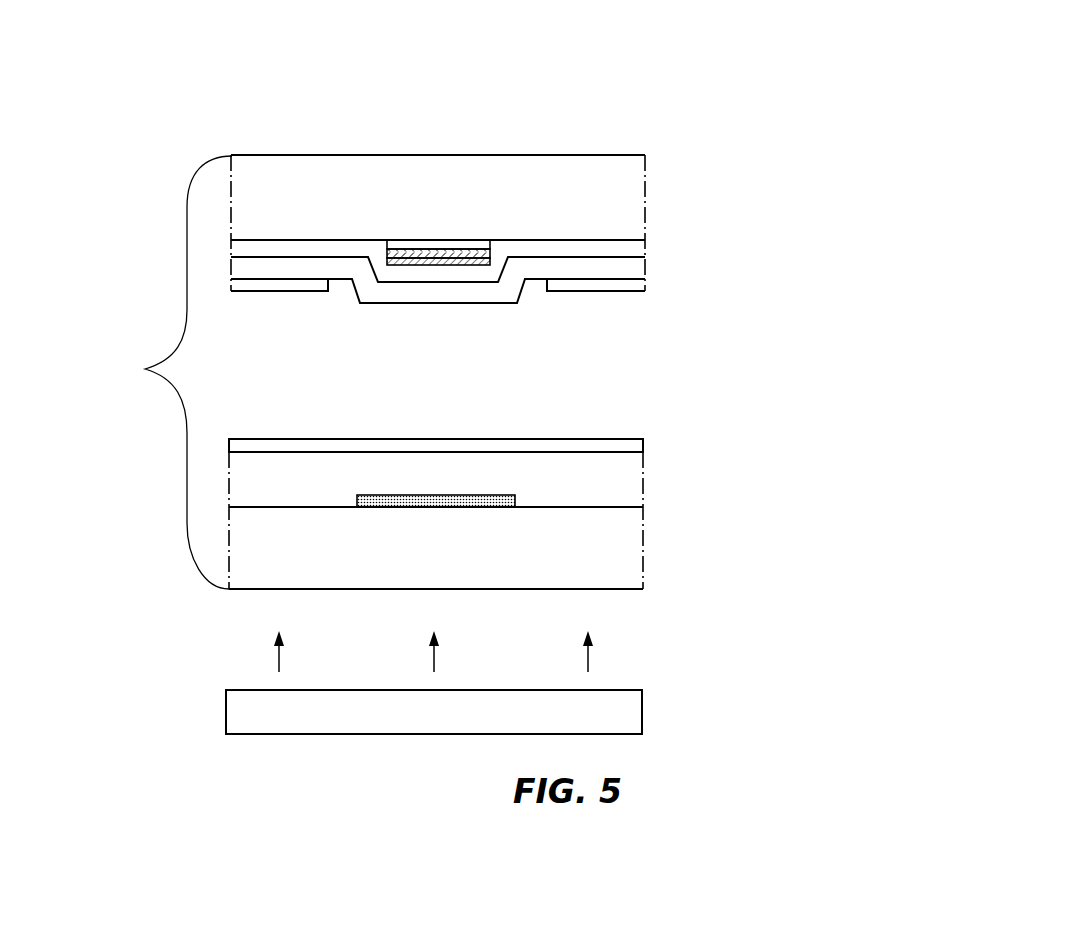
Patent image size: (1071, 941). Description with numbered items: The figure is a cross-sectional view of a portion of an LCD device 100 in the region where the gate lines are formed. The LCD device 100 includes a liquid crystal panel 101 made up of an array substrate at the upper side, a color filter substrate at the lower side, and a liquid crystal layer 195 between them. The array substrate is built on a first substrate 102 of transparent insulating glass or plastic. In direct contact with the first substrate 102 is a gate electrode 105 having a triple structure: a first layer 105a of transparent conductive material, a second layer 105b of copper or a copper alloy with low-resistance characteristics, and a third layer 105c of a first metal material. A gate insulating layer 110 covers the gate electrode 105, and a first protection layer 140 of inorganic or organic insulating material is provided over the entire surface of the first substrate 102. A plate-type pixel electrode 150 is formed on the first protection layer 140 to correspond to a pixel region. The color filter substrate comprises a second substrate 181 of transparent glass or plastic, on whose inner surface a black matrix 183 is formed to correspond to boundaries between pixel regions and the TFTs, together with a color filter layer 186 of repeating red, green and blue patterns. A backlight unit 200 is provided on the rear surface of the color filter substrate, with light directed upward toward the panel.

The LCD device 100 is at (630, 97).
The liquid crystal panel 101 is at (168, 372).
The first substrate 102 is at (636, 217).
The gate electrode 105 is at (517, 183).
The first layer 105a is at (426, 243).
The second layer 105b is at (445, 253).
The third layer 105c is at (445, 262).
The gate insulating layer 110 is at (421, 273).
The first protection layer 140 is at (460, 292).
The pixel electrode 150 is at (577, 286).
The second substrate 181 is at (634, 567).
The black matrix 183 is at (438, 505).
The color filter layer 186 is at (543, 467).
The liquid crystal layer 195 is at (626, 379).
The backlight unit 200 is at (622, 712).